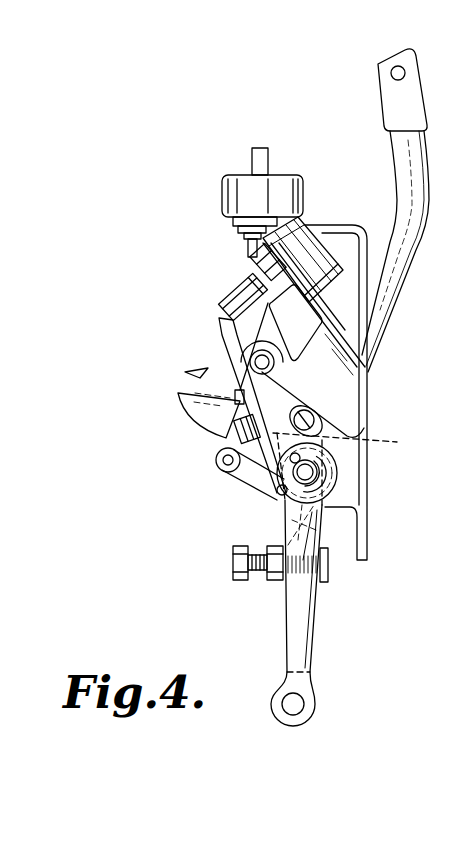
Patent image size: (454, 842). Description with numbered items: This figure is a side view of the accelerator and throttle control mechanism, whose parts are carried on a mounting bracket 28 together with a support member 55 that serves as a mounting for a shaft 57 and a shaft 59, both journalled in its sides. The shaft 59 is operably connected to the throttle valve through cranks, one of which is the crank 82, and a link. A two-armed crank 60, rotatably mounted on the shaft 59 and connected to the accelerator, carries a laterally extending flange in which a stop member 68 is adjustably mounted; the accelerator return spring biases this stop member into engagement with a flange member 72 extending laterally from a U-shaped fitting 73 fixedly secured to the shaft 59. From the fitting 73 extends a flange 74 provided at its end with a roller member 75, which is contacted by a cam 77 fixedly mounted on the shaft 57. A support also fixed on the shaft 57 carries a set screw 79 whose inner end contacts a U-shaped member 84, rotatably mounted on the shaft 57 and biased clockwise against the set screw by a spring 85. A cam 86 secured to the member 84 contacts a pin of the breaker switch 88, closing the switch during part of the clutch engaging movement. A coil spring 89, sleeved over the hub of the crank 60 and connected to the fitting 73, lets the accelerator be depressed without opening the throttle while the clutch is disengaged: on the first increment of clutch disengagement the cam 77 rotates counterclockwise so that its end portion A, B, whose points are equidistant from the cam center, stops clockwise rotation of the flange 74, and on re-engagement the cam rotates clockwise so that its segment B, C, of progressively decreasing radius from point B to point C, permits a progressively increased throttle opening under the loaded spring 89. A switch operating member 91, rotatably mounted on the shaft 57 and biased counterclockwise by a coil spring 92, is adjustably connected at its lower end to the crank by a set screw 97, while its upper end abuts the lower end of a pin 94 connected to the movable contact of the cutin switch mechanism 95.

The crank 82 is at (405, 153).
The breaker switch 88 is at (280, 187).
The cutin switch mechanism 95 is at (313, 221).
The pin 94 is at (233, 313).
The switch operating member 91 is at (235, 340).
The cam 86 is at (316, 295).
The spring 85 is at (270, 340).
The coil spring 92 is at (303, 363).
The mounting bracket 28 is at (297, 392).
The shaft 57 is at (247, 360).
The set screw 79 is at (190, 370).
The cam 77 is at (188, 388).
The U-shaped member 84 is at (236, 403).
The set screw 97 is at (229, 441).
The U-shaped fitting 73 is at (350, 442).
The support member 55 is at (362, 457).
The roller member 75 is at (217, 462).
The flange 74 is at (242, 476).
The shaft 59 is at (279, 488).
The coil spring 89 is at (290, 518).
The stop member 68 is at (258, 579).
The flange member 72 is at (328, 581).
The two-armed crank 60 is at (308, 622).
The point A of cam end portion A is at (171, 398).
The point B of cam B is at (186, 425).
The point C of cam C is at (214, 439).